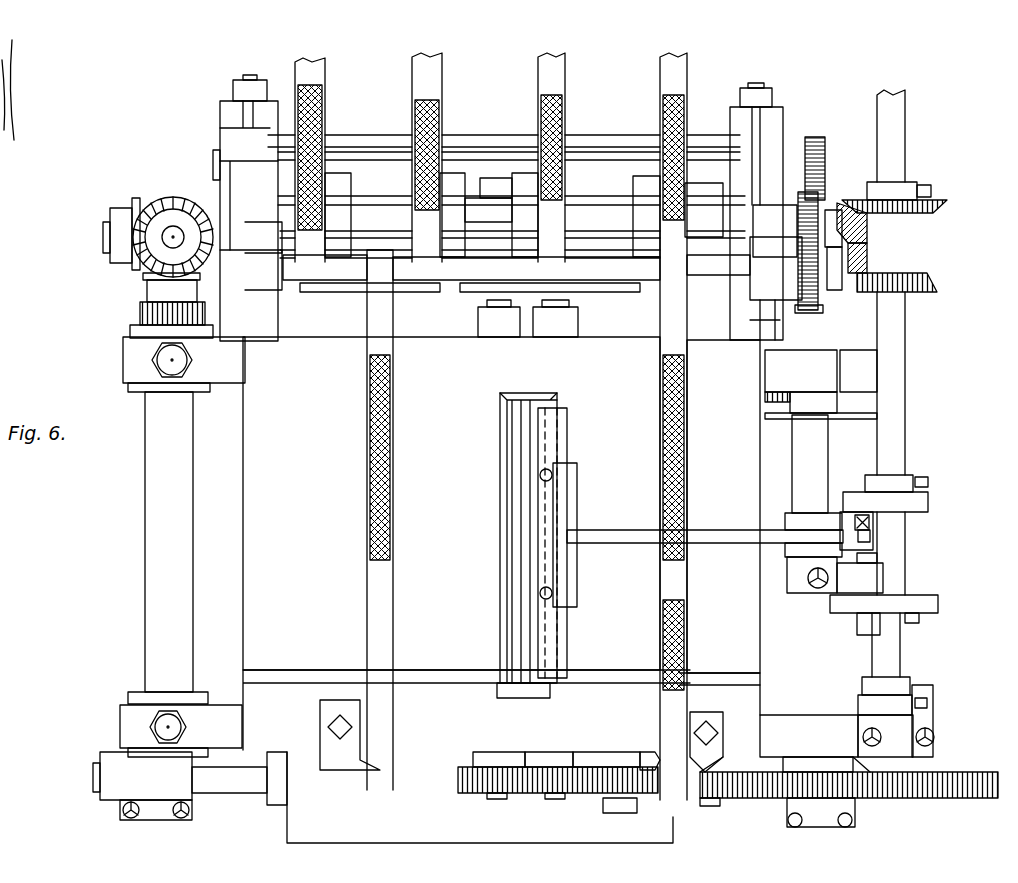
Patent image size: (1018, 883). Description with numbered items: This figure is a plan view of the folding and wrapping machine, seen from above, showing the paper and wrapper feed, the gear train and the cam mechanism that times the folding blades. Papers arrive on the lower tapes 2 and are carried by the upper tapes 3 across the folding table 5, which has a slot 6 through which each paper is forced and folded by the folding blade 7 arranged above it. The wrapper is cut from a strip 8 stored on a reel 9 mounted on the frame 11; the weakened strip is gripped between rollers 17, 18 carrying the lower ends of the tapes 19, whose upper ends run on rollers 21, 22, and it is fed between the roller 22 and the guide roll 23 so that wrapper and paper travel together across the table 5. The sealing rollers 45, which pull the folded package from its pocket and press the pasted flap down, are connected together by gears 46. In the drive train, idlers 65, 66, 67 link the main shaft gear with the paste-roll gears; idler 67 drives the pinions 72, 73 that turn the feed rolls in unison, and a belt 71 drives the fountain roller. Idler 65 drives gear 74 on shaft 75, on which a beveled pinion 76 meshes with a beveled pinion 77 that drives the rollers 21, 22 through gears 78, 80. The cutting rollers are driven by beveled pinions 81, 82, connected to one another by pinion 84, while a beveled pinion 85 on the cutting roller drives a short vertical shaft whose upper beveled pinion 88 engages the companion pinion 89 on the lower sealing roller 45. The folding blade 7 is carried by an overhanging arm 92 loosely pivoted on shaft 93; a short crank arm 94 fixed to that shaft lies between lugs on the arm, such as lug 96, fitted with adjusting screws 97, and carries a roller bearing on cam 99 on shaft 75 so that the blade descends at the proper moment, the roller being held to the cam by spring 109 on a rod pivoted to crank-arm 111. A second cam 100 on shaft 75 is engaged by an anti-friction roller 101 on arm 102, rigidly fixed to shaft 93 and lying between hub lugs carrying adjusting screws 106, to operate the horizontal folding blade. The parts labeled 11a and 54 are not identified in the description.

The lower tape 2 is at (312, 85).
The upper tape 3 is at (688, 640).
The folding table 5 is at (248, 535).
The slot 6 is at (500, 462).
The folding blade 7 is at (550, 438).
The strip 8 is at (288, 826).
The reel 9 is at (225, 790).
The frame 11 is at (133, 722).
The upper clamp block 11a is at (135, 360).
The roller 17 is at (486, 190).
The roller 18 is at (476, 220).
The tape 19 is at (340, 180).
The roller 21 is at (385, 200).
The roller 22 is at (425, 292).
The guide roll 23 is at (318, 270).
The sealing roller 45 is at (150, 534).
The gear 46 is at (142, 314).
The bearing block 54 is at (933, 692).
The idler 65 is at (770, 800).
The idler 66 is at (735, 800).
The idler 67 is at (610, 793).
The belt 71 is at (772, 428).
The pinion 72 is at (468, 792).
The pinion 73 is at (540, 793).
The gear 74 is at (900, 790).
The shaft 75 is at (895, 400).
The beveled pinion 76 is at (935, 200).
The beveled pinion 77 is at (868, 232).
The gear 78 is at (820, 195).
The gear 80 is at (810, 312).
The beveled pinion 81 is at (937, 284).
The beveled pinion 82 is at (868, 258).
The pinion 84 is at (813, 150).
The beveled pinion 85 is at (136, 200).
The beveled pinion 88 is at (178, 205).
The companion pinion 89 is at (146, 270).
The overhanging arm 92 is at (712, 530).
The shaft 93 is at (815, 470).
The crank arm 94 is at (800, 522).
The lug 96 is at (870, 533).
The adjusting screw 97 is at (872, 522).
The cam 99 is at (918, 498).
The cam 100 is at (938, 606).
The anti-friction roller 101 is at (866, 625).
The arm 102 is at (885, 578).
The adjusting screw 106 is at (808, 578).
The spring 109 is at (782, 393).
The crank-arm 111 is at (845, 402).